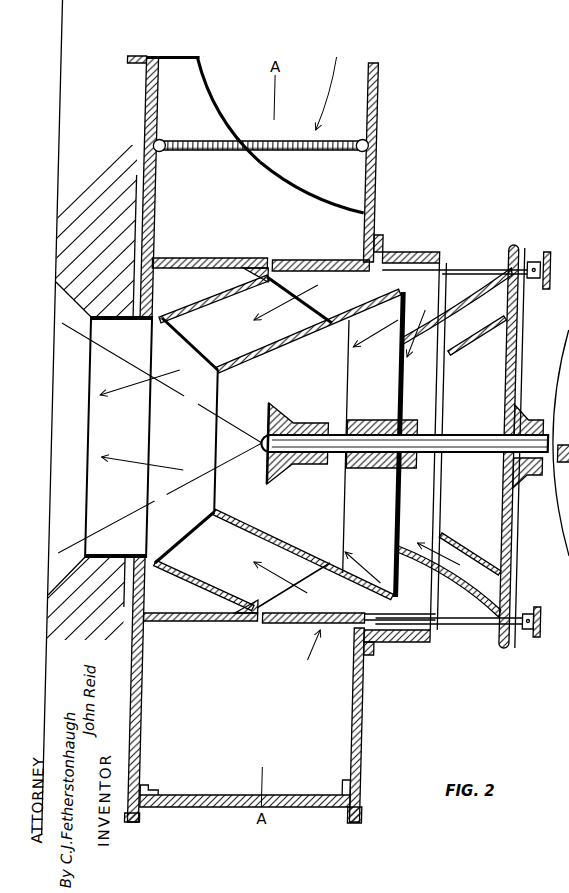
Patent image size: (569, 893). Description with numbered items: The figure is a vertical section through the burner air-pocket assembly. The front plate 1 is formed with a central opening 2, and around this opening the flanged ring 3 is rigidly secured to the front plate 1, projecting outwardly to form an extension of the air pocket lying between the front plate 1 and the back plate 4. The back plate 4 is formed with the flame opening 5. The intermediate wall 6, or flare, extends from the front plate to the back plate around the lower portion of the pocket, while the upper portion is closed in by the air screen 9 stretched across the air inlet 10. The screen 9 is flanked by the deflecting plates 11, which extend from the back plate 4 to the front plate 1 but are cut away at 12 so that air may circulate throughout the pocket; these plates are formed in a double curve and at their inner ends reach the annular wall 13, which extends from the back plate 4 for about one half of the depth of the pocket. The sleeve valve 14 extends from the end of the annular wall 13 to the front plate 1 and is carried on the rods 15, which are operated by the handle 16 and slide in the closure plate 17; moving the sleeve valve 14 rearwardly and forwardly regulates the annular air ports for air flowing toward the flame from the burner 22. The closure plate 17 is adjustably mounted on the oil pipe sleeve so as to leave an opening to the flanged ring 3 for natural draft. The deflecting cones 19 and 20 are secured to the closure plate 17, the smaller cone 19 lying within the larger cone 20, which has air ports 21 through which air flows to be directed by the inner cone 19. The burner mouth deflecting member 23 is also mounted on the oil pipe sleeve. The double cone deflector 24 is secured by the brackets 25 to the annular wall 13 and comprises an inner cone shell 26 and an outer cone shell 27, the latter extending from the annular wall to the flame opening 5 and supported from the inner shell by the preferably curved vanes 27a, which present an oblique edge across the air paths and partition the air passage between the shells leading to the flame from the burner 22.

The front plate 1 is at (370, 190).
The central opening 2 is at (373, 446).
The flanged ring 3 is at (401, 252).
The back plate 4 is at (151, 193).
The flame opening 5 is at (136, 437).
The intermediate wall 6 is at (189, 795).
The air screen 9 is at (239, 140).
The air inlet 10 is at (312, 94).
The deflecting plate 11 is at (215, 113).
The cut-away portion 12 is at (289, 185).
The annular wall 13 is at (202, 258).
The sleeve valve 14 is at (298, 260).
The rods 15 is at (457, 268).
The handle 16 is at (546, 268).
The closure plate 17 is at (518, 352).
The smaller deflecting cone 19 is at (466, 349).
The larger deflecting cone 20 is at (400, 552).
The air ports 21 is at (468, 300).
The burner 22 is at (262, 438).
The burner mouth deflecting member 23 is at (288, 418).
The double cone deflector 24 is at (396, 294).
The brackets 25 is at (239, 272).
The inner cone shell 26 is at (281, 341).
The outer cone shell 27 is at (217, 299).
The vanes 27a is at (207, 473).